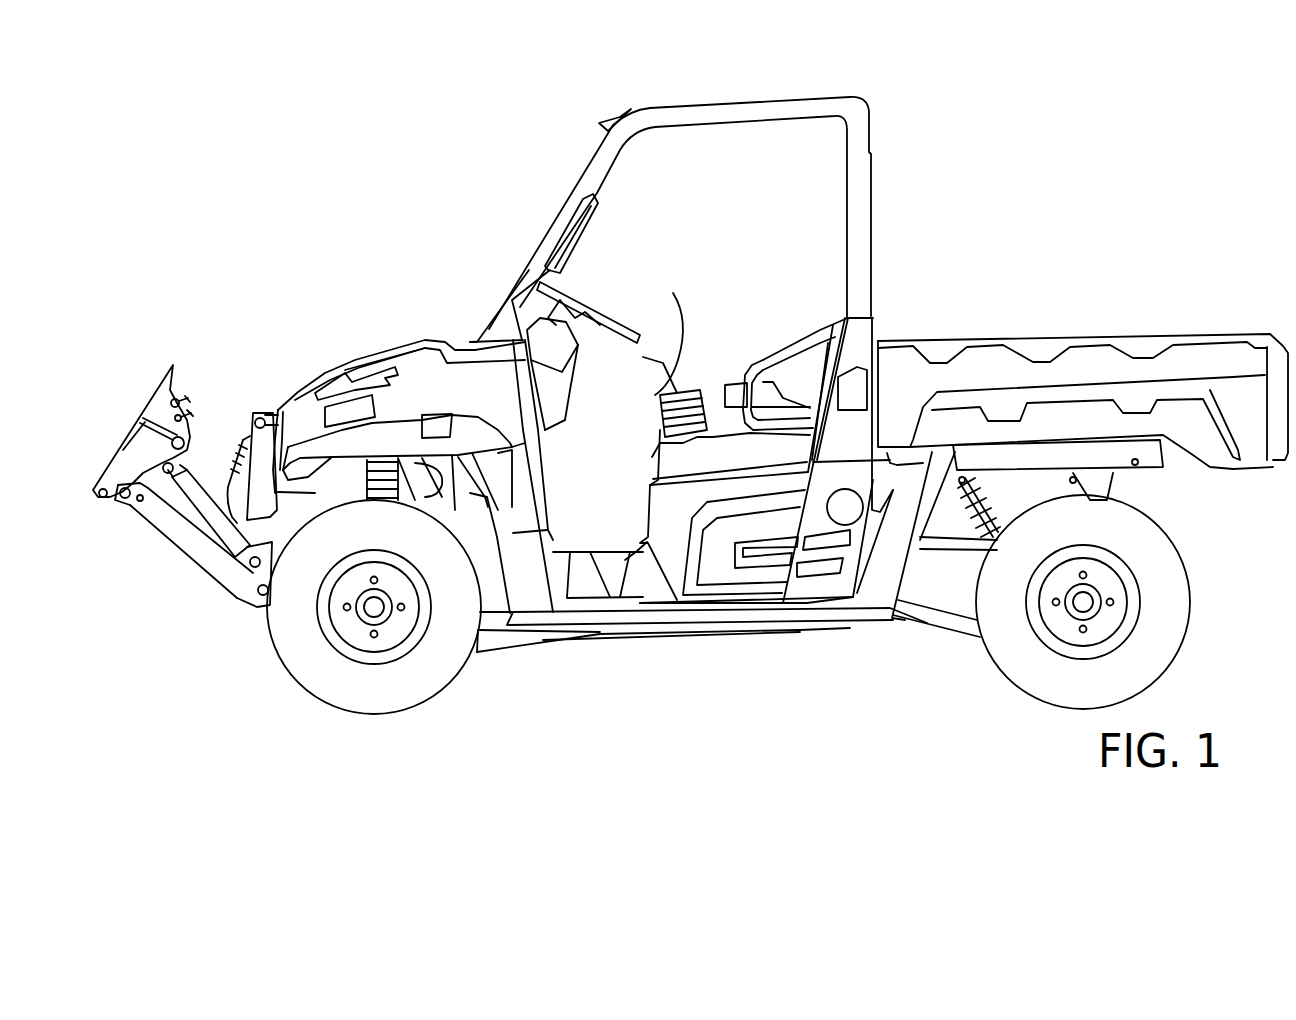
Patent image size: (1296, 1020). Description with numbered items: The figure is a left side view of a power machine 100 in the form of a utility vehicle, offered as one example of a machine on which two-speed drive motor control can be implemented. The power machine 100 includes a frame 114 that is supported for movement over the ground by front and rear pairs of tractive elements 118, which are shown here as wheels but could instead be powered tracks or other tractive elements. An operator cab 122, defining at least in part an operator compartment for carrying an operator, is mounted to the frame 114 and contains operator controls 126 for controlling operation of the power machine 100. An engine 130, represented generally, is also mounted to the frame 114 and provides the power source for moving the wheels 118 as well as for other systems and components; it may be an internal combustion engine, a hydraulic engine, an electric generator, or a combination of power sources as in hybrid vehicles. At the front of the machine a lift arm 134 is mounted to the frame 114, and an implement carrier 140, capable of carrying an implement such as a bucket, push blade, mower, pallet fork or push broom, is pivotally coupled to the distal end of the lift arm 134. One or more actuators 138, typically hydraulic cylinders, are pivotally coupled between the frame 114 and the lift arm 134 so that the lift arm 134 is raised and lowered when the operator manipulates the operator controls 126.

The power machine 100 is at (1012, 86).
The frame 114 is at (735, 628).
The tractive elements 118 is at (378, 690).
The operator cab 122 is at (733, 98).
The operator controls 126 is at (580, 300).
The engine 130 is at (792, 580).
The lift arm 134 is at (213, 560).
The actuators 138 is at (240, 433).
The implement carrier 140 is at (173, 367).